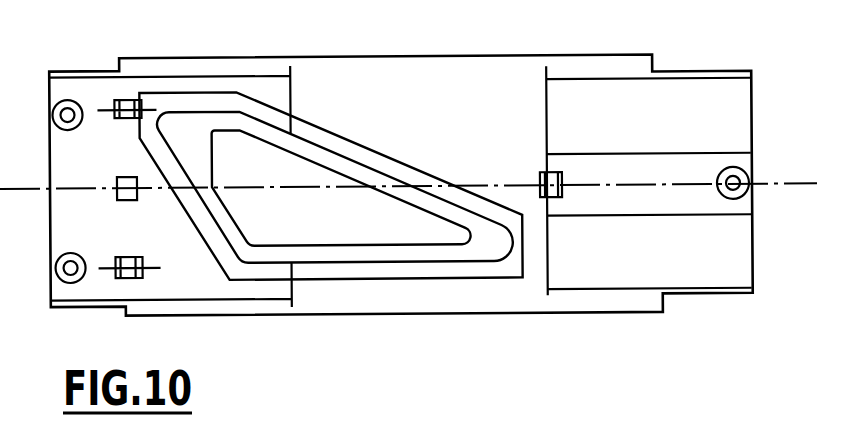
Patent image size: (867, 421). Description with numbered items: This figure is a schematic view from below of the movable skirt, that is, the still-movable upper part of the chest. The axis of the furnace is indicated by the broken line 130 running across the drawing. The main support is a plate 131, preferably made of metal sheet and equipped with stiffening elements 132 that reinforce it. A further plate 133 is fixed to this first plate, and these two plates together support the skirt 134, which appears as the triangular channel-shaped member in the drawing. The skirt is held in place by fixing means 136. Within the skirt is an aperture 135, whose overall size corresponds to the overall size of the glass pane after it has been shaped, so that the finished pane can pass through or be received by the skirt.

The axis of the furnace 130 is at (788, 186).
The plate 131 is at (437, 80).
The stiffening elements 132 is at (610, 95).
The plate 133 is at (465, 188).
The skirt 134 is at (318, 158).
The aperture 135 is at (341, 187).
The fixing means 136 is at (113, 113).